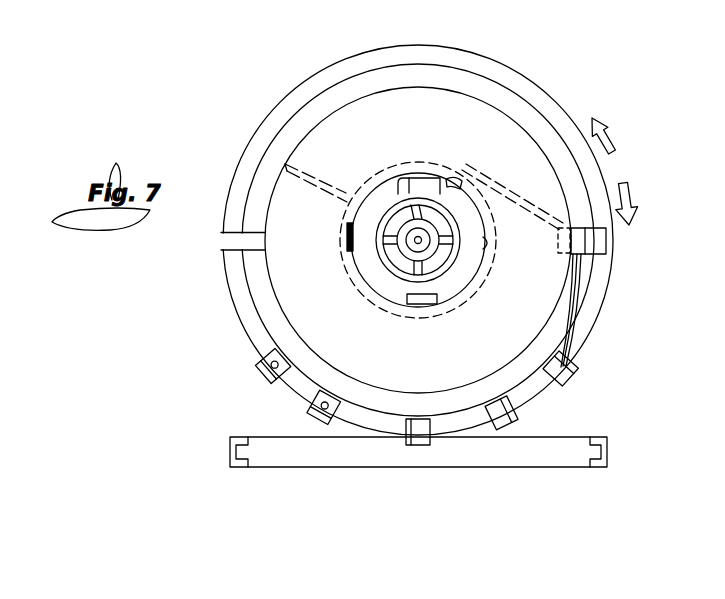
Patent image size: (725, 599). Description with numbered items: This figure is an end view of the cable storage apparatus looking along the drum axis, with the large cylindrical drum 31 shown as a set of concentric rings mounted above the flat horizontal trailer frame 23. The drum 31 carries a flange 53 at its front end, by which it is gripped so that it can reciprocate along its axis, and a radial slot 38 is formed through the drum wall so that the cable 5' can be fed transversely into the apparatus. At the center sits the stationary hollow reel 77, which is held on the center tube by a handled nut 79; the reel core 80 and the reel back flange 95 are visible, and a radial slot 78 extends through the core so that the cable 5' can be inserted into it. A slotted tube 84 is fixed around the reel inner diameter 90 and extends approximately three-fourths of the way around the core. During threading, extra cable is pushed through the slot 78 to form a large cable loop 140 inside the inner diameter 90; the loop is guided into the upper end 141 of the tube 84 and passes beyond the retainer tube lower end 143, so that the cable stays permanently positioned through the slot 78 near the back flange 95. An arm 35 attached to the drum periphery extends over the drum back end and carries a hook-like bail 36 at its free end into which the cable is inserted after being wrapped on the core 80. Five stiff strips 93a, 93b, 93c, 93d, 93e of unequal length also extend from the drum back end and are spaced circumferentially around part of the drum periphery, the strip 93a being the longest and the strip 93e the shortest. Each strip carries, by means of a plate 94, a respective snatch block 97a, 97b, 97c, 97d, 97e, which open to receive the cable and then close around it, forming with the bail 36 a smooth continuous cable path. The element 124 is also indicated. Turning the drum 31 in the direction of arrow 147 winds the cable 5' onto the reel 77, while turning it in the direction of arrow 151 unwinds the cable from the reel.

The drum 31 is at (300, 123).
The back flange 95 is at (487, 113).
The reel 77 is at (550, 321).
The radial slot 38 is at (230, 238).
The cable 5' is at (465, 242).
The radial slot 78 is at (300, 165).
The flange 53 is at (588, 282).
The bail 36 is at (608, 233).
The arm 35 is at (607, 250).
The arrow 151 is at (598, 122).
The arrow 147 is at (628, 193).
The slotted tube 84 is at (462, 292).
The handled nut 79 is at (388, 278).
The reel inner diameter 90 is at (488, 246).
The reel core 80 is at (478, 288).
The cable loop 140 is at (395, 180).
The upper end 141 is at (454, 183).
The retainer tube lower end 143 is at (348, 252).
The snatch block 97a is at (258, 365).
The snatch block 97b is at (315, 411).
The snatch block 97c is at (415, 446).
The snatch block 97d is at (515, 417).
The snatch block 97e is at (575, 370).
The strip 93a is at (262, 352).
The strip 93b is at (333, 395).
The strip 93c is at (420, 419).
The strip 93d is at (497, 400).
The strip 93e is at (560, 362).
The plate 94 is at (284, 377).
The ring end 124 is at (548, 385).
The frame 23 is at (607, 443).